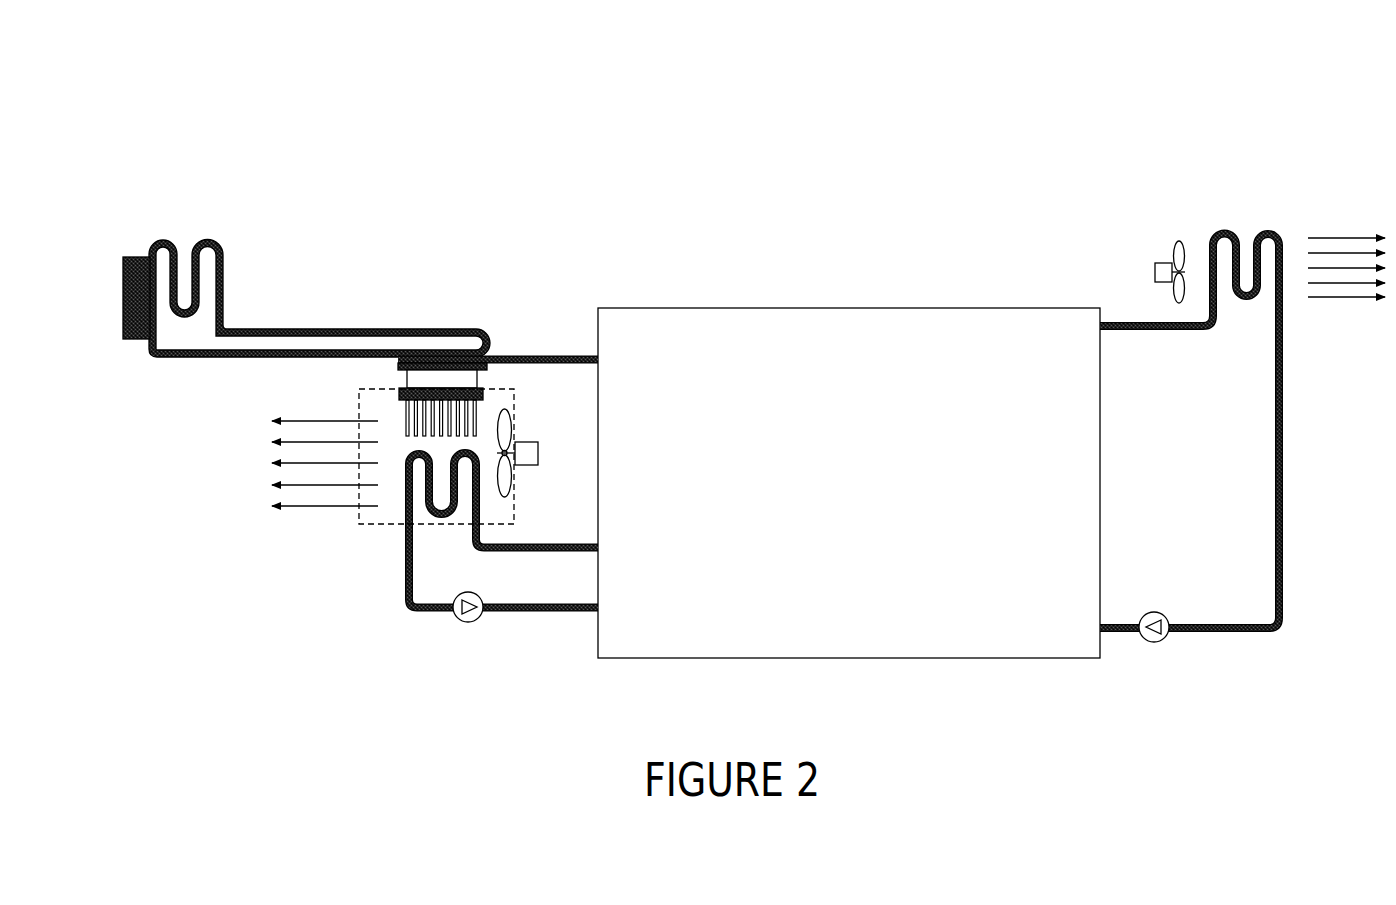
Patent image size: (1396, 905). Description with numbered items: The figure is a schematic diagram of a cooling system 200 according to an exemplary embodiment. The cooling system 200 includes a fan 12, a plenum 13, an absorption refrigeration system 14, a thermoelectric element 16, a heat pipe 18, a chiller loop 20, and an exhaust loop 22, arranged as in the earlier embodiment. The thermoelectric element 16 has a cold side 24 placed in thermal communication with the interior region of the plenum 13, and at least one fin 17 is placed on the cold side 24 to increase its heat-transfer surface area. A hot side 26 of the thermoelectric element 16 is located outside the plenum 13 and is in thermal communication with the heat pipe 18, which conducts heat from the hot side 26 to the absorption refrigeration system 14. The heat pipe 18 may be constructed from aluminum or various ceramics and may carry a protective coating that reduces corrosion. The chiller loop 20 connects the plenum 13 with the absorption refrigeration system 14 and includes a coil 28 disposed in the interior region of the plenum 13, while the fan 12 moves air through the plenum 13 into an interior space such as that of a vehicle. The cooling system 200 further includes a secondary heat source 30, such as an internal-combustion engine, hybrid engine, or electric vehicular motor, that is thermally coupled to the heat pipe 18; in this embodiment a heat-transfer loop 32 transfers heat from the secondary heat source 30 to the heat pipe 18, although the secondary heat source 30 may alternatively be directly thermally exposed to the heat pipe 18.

The cooling system 200 is at (404, 197).
The fan 12 is at (530, 468).
The plenum 13 is at (383, 525).
The absorption refrigeration system 14 is at (945, 308).
The thermoelectric element 16 is at (479, 371).
The fin 17 is at (407, 418).
The heat pipe 18 is at (508, 356).
The chiller loop 20 is at (420, 613).
The exhaust loop 22 is at (1218, 633).
The cold side 24 is at (402, 388).
The hot side 26 is at (478, 367).
The coil 28 is at (480, 515).
The secondary heat source 30 is at (123, 310).
The heat-transfer loop 32 is at (197, 358).